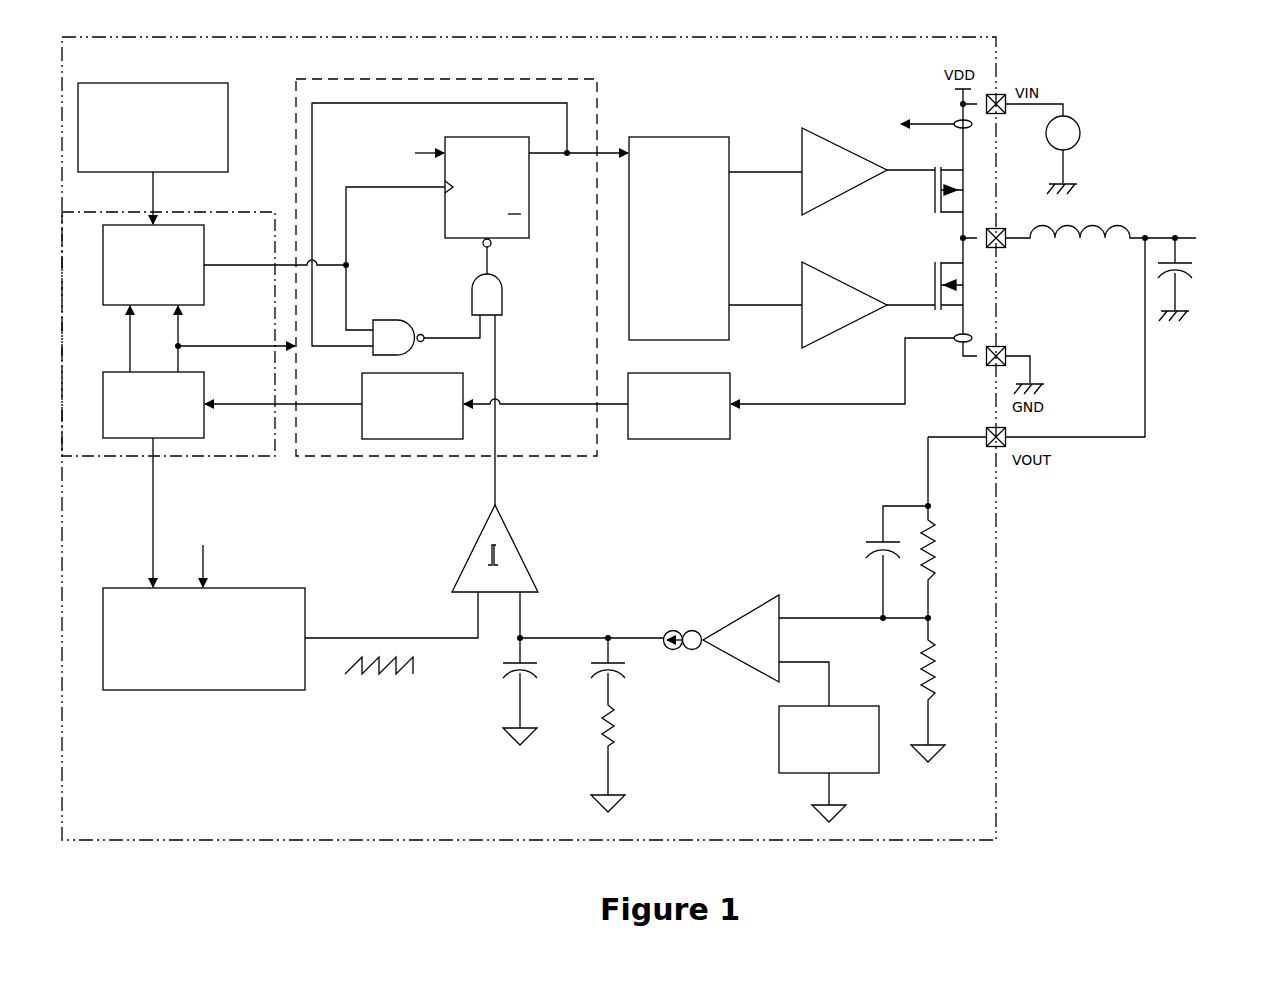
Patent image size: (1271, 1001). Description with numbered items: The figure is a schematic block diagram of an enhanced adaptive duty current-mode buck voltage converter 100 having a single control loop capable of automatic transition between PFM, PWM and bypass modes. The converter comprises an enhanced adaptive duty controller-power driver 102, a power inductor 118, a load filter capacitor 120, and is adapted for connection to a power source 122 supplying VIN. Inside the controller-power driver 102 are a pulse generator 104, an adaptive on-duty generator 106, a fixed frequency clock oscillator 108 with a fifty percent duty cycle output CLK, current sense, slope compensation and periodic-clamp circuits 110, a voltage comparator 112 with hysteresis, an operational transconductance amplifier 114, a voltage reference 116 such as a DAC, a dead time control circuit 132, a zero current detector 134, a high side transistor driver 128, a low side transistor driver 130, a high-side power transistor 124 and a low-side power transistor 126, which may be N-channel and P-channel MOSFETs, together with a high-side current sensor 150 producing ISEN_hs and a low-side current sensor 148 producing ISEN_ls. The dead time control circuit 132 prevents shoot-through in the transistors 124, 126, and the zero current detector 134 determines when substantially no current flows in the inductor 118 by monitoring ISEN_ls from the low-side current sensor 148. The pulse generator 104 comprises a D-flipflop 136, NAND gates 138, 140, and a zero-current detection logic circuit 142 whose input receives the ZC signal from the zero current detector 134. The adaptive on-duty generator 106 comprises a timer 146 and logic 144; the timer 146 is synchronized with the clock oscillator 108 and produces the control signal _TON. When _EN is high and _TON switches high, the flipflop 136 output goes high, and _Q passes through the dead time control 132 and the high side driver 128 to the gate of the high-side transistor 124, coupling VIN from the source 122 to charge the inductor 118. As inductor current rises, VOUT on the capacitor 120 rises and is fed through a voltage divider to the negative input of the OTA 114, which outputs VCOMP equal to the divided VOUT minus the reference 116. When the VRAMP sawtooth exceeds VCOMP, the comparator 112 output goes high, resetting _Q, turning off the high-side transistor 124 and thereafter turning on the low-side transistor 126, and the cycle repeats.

The current-mode buck voltage converter 100 is at (1116, 654).
The enhanced adaptive duty controller-power driver 102 is at (996, 590).
The pulse generator 104 is at (598, 124).
The adaptive on-duty generator 106 is at (213, 458).
The fixed frequency clock oscillator 108 is at (233, 126).
The current sense, slope compensation and periodic-clamp circuits 110 is at (250, 588).
The voltage comparator 112 is at (514, 546).
The operational transconductance amplifier 114 is at (752, 612).
The voltage reference 116 is at (779, 748).
The power inductor 118 is at (1091, 251).
The load filter capacitor 120 is at (1191, 276).
The power source 122 is at (1080, 127).
The high-side power transistor 124 is at (934, 192).
The low-side power transistor 126 is at (934, 285).
The high side transistor driver 128 is at (802, 196).
The low side transistor driver 130 is at (802, 330).
The dead time control circuit 132 is at (680, 137).
The zero current detector 134 is at (680, 440).
The flipflop 136 is at (530, 198).
The NAND gate 138 is at (505, 297).
The NAND gate 140 is at (399, 322).
The zero-current detection logic circuit 142 is at (362, 400).
The logic 144 is at (103, 406).
The timer 146 is at (103, 268).
The low-side current sensor 148 is at (956, 345).
The high-side current sensor 150 is at (957, 120).